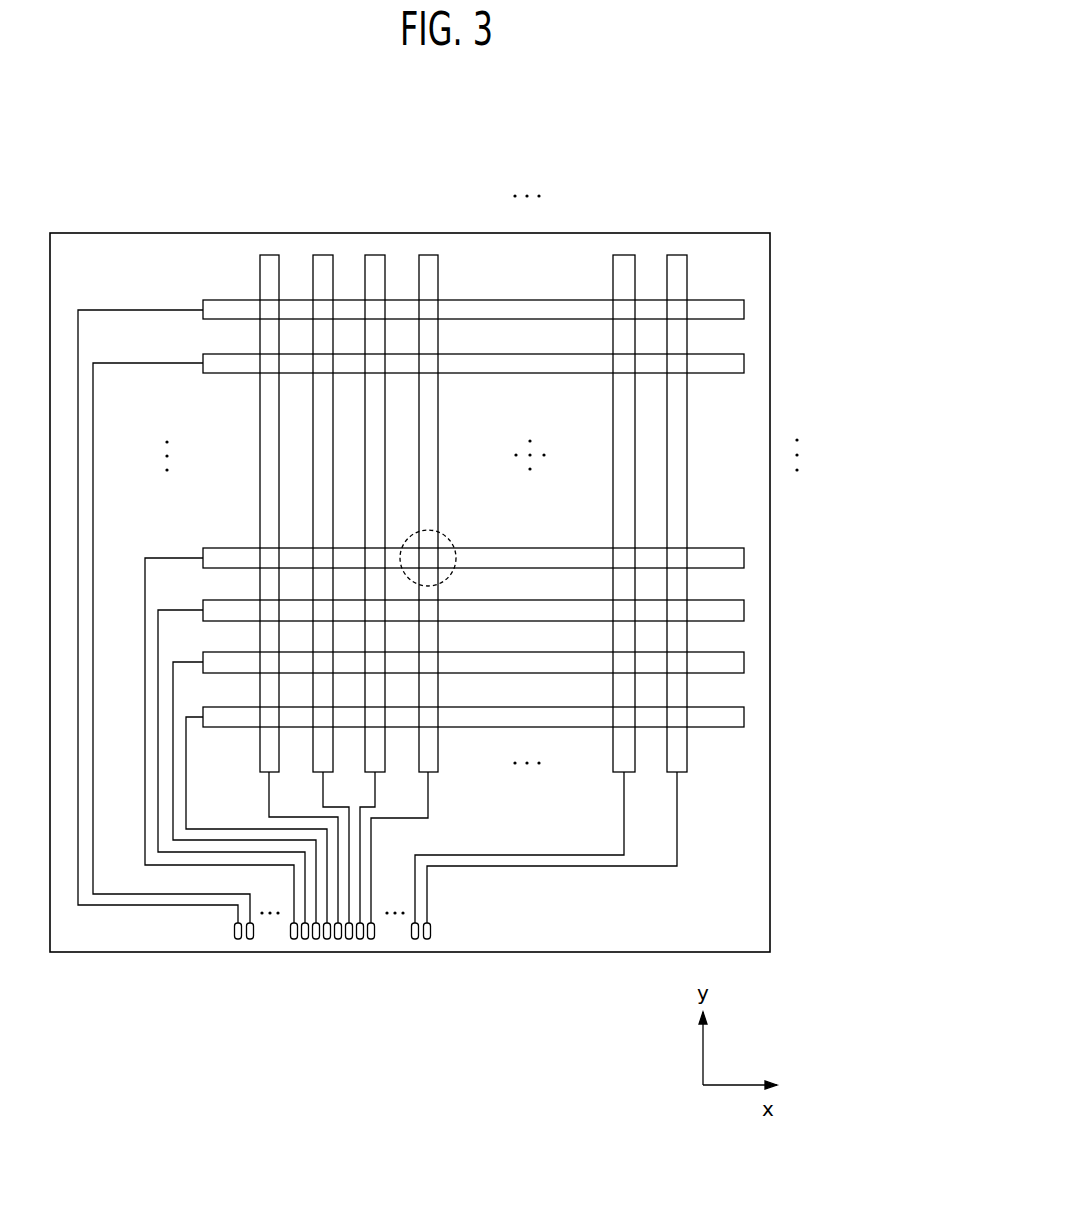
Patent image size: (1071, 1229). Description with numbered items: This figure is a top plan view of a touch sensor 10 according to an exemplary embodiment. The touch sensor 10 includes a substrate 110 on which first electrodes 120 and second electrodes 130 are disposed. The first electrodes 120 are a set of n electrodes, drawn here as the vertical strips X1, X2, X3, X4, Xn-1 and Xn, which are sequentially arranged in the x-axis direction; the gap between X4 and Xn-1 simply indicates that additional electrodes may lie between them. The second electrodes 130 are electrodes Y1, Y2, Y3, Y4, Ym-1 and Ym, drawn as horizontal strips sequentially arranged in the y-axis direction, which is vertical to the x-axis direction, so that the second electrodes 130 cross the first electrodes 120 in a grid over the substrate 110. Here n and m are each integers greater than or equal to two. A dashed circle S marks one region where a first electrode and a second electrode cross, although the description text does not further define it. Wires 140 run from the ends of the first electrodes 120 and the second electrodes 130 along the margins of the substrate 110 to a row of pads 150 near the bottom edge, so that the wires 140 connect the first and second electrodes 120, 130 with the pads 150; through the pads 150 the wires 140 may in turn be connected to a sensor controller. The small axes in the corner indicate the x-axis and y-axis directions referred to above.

The touch sensor 10 is at (797, 108).
The substrate 110 is at (770, 920).
The first electrodes 120 is at (250, 178).
The second electrodes 130 is at (845, 736).
The wires 140 is at (147, 310).
The pads 150 is at (427, 940).
The sensing cell region S is at (443, 536).
The first electrode X1 is at (269, 255).
The first electrode X2 is at (323, 255).
The first electrode X3 is at (375, 255).
The first electrode X4 is at (428, 255).
The first electrode Xn-1 is at (624, 255).
The first electrode Xn is at (677, 255).
The second electrode Y1 is at (744, 717).
The second electrode Y2 is at (744, 663).
The second electrode Y3 is at (744, 611).
The second electrode Y4 is at (744, 558).
The second electrode Ym-1 is at (744, 364).
The second electrode Ym is at (744, 310).